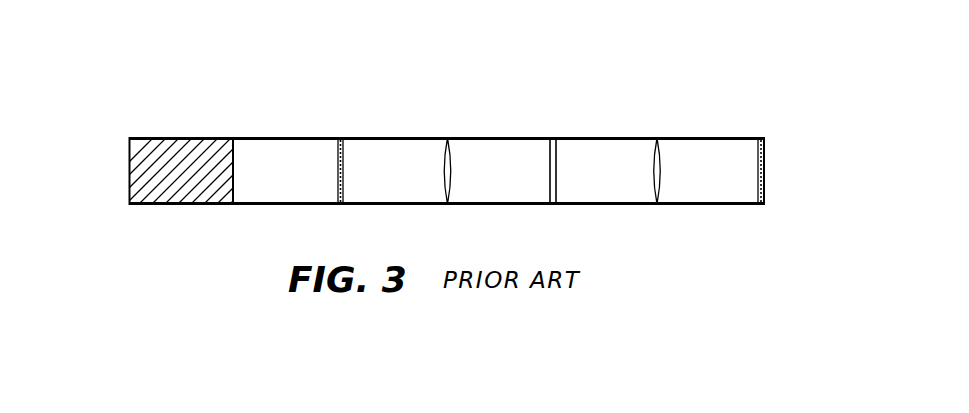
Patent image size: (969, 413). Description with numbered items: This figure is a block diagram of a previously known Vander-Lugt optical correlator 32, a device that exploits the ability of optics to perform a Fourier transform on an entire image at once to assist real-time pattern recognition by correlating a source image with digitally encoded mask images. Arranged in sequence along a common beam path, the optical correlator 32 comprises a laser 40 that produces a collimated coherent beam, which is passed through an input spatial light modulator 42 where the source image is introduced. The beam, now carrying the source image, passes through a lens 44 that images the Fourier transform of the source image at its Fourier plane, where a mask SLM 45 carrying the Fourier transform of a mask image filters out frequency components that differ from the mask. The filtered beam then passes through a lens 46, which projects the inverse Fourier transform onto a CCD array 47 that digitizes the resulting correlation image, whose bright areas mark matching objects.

The optical correlator 32 is at (128, 92).
The laser 40 is at (177, 150).
The input spatial light modulator 42 is at (343, 138).
The lens 44 is at (448, 138).
The mask SLM 45 is at (553, 138).
The lens 46 is at (657, 138).
The CCD array 47 is at (766, 160).